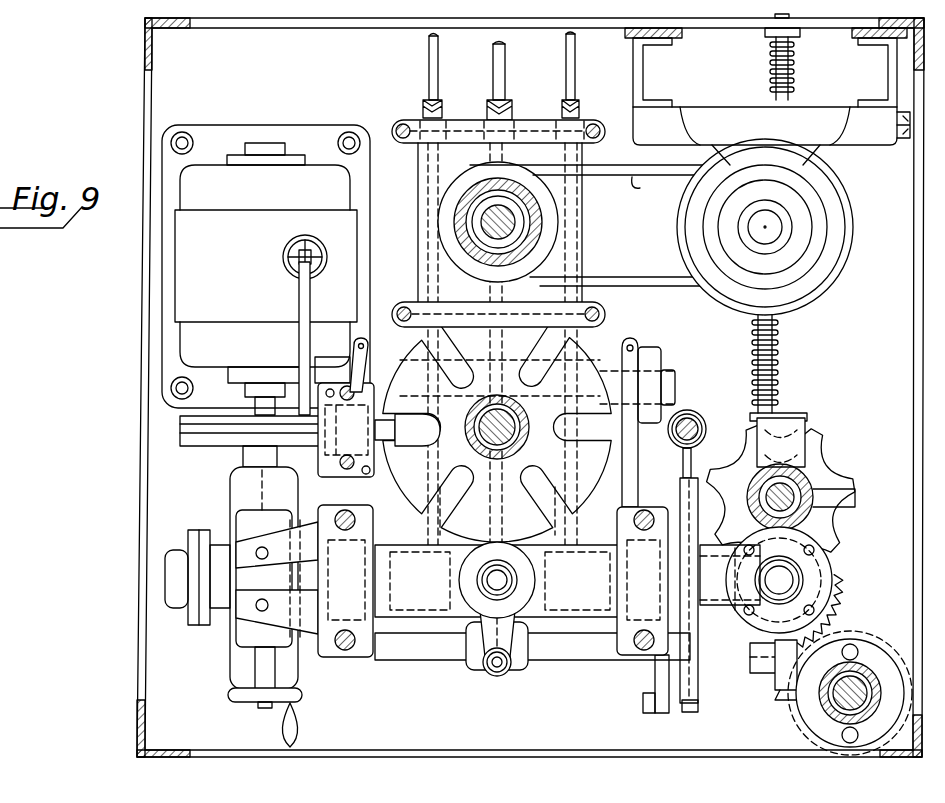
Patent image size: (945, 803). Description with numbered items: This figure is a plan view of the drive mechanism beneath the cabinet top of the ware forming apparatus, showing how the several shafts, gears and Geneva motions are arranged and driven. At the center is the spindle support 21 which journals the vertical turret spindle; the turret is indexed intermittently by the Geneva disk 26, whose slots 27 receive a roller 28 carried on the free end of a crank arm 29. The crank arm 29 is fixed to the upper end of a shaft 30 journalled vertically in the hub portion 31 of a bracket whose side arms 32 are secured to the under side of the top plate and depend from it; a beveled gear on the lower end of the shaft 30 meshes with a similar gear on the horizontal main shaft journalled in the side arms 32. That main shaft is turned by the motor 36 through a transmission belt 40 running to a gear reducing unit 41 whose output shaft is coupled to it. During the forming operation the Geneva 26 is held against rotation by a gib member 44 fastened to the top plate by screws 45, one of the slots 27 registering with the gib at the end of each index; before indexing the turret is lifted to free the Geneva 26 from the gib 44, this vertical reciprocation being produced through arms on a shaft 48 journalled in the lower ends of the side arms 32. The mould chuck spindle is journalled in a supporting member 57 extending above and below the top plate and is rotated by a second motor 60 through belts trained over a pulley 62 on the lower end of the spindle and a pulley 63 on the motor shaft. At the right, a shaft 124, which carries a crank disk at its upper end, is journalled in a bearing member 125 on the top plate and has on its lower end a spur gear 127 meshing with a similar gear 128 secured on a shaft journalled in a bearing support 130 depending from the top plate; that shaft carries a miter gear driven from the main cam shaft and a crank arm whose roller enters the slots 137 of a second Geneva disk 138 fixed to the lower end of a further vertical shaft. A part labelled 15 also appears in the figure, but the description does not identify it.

The mounting post 15 is at (490, 193).
The spindle support 21 is at (470, 441).
The Geneva disk 26 is at (497, 427).
The slots 27 is at (598, 430).
The roller 28 is at (497, 676).
The crank arm 29 is at (480, 621).
The shaft 30 is at (490, 580).
The hub portion 31 is at (478, 560).
The side arms 32 is at (620, 650).
The motor 36 is at (266, 270).
The transmission belt 40 is at (205, 440).
The gear reducing unit 41 is at (232, 487).
The gib member 44 is at (407, 430).
The screws 45 is at (352, 392).
The shaft 48 is at (532, 646).
The supporting member 57 is at (531, 222).
The motor 60 is at (779, 227).
The pulley 62 is at (550, 237).
The pulley 63 is at (808, 265).
The shaft 124 is at (838, 698).
The bearing member 125 is at (827, 685).
The spur gear 127 is at (845, 625).
The gear 128 is at (843, 608).
The bearing support 130 is at (790, 578).
The slots 137 is at (848, 497).
The Geneva disk 138 is at (832, 470).